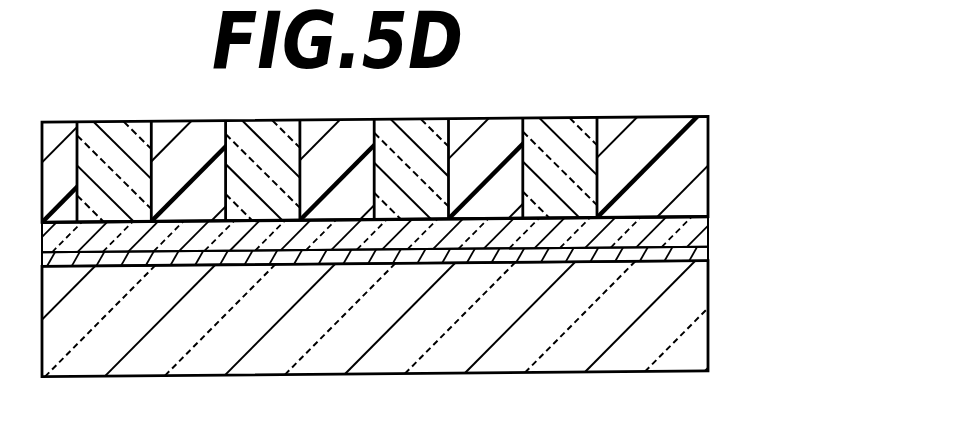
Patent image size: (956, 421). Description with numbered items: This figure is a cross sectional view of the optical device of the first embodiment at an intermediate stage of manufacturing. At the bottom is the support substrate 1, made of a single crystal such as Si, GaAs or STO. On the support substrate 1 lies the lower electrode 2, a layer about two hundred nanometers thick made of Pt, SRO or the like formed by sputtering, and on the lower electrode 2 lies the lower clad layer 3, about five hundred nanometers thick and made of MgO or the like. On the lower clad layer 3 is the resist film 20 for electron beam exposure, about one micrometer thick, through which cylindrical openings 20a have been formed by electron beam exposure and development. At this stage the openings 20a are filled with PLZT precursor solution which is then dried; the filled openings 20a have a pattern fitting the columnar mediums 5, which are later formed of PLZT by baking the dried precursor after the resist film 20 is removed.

The support substrate 1 is at (412, 313).
The lower electrode 2 is at (417, 247).
The lower clad layer 3 is at (420, 222).
The columnar mediums 5 is at (380, 200).
The resist film 20 is at (435, 143).
The openings 20a is at (446, 142).